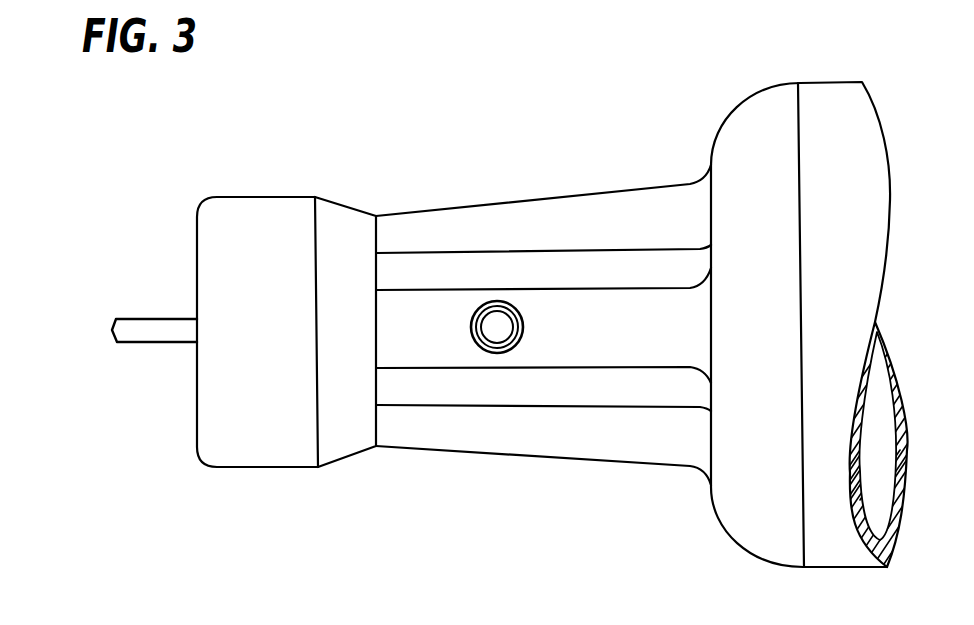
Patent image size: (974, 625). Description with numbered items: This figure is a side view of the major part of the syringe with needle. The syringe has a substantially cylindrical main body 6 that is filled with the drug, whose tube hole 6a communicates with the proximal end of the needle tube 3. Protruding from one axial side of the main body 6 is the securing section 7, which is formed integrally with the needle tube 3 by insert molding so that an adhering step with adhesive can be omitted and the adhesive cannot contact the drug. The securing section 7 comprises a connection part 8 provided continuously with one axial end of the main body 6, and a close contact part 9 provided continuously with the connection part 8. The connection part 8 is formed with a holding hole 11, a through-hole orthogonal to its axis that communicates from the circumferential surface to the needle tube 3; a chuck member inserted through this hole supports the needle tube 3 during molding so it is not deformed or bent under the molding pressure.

The needle tube 3 is at (135, 344).
The main body 6 is at (815, 92).
The tube hole 6a is at (885, 452).
The securing section 7 is at (454, 363).
The connection part 8 is at (308, 527).
The close contact part 9 is at (290, 455).
The holding hole 11 is at (500, 338).